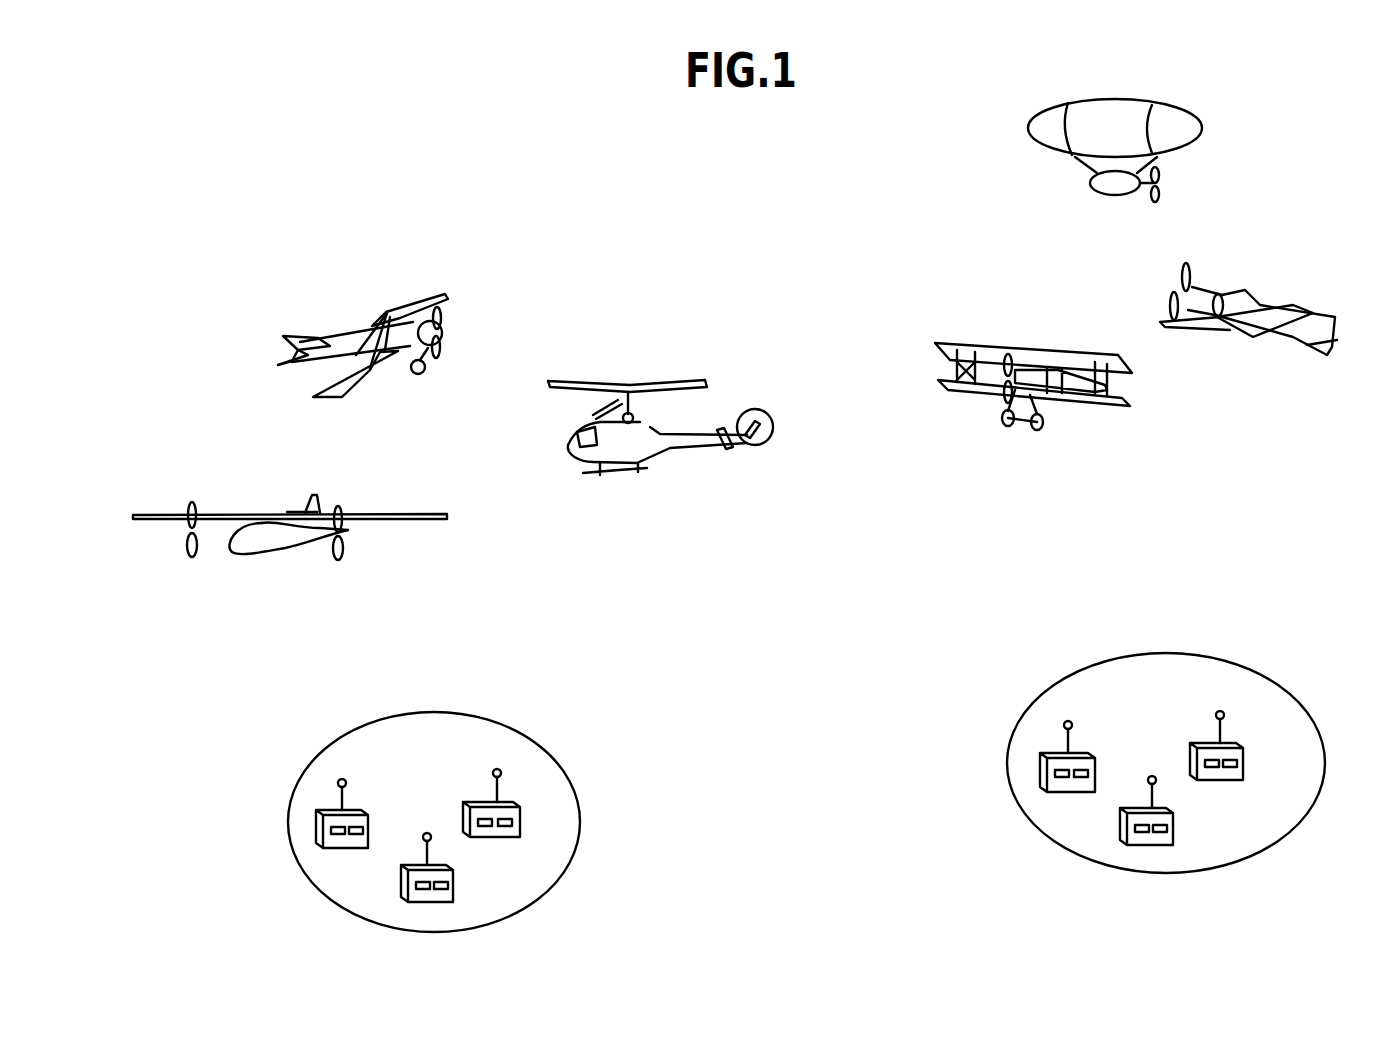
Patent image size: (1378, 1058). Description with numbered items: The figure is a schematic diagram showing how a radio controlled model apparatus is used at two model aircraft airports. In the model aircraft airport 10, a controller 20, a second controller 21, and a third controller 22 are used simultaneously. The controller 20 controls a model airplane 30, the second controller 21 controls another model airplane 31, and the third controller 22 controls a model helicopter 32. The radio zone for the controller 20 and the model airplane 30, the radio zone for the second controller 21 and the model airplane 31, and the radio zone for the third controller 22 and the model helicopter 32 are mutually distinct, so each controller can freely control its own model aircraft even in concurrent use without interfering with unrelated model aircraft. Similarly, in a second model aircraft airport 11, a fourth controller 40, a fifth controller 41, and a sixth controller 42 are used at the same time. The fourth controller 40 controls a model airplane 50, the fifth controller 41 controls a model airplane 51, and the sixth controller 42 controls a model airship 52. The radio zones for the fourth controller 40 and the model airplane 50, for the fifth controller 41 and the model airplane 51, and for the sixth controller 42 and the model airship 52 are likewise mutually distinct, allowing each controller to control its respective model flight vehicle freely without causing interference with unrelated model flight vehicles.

The model aircraft airport 10 is at (567, 774).
The second model aircraft airport 11 is at (1284, 691).
The controller 20 is at (369, 825).
The second controller 21 is at (521, 821).
The third controller 22 is at (454, 882).
The model airplane 30 is at (223, 512).
The model airplane 31 is at (339, 338).
The model helicopter 32 is at (693, 433).
The fourth controller 40 is at (1096, 767).
The fifth controller 41 is at (1244, 765).
The sixth controller 42 is at (1174, 828).
The model airplane 50 is at (1033, 355).
The model airplane 51 is at (1275, 300).
The model airship 52 is at (1193, 115).